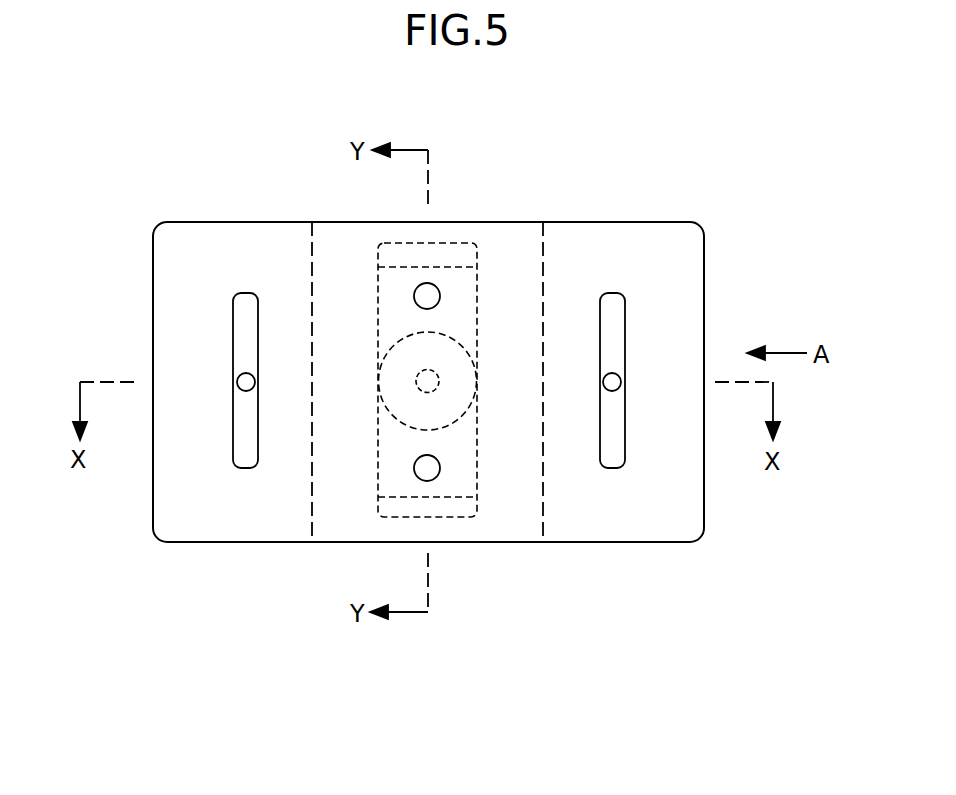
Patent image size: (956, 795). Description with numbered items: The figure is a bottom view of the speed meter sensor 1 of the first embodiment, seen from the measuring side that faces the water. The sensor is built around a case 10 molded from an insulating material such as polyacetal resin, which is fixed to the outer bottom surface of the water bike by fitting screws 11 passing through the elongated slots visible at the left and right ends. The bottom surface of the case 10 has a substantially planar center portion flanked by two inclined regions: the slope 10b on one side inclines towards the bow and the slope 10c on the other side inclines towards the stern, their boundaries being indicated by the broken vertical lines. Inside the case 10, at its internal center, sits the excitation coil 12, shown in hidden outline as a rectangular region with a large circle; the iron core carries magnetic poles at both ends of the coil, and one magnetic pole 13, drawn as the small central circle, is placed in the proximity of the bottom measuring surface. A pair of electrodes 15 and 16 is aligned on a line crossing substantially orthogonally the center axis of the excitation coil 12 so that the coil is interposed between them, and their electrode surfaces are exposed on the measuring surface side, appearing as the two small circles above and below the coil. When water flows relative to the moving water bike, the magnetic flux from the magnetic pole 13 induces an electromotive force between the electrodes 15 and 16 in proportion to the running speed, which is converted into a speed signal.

The optical device / assembly 1 is at (286, 551).
The case 10 is at (562, 515).
The slope 10b is at (627, 250).
The slope 10c is at (229, 242).
The fitting screws 11 is at (237, 382).
The excitation coil 12 is at (452, 346).
The magnetic pole 13 is at (453, 423).
The electrode 15 is at (414, 296).
The electrode 16 is at (414, 468).